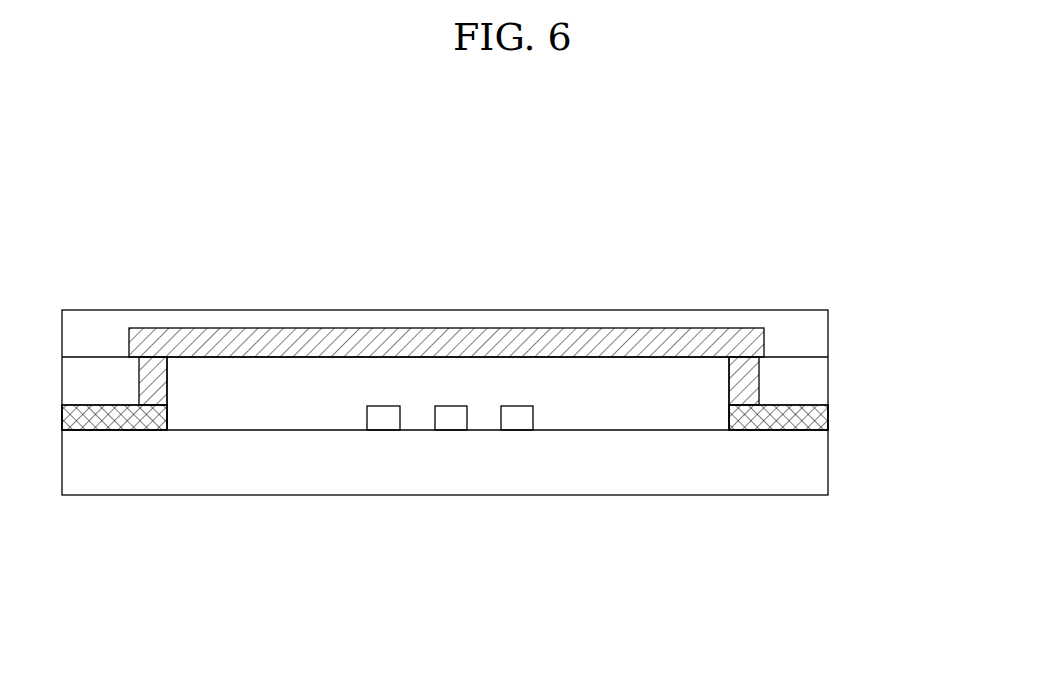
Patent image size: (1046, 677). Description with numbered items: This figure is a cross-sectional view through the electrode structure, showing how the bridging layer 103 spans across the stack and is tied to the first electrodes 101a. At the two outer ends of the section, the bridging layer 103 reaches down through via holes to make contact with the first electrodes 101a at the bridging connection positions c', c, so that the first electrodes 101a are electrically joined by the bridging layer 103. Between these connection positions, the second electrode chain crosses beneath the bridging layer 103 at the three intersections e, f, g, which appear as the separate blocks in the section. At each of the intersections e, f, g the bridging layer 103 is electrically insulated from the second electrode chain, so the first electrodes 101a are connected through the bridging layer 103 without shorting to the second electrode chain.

The bridging layer 103 is at (428, 330).
The first electrodes 101a is at (828, 407).
The bridging connection position c is at (772, 473).
The bridging connection position c' is at (114, 472).
The intersection e is at (385, 422).
The intersection f is at (452, 422).
The intersection g is at (518, 422).